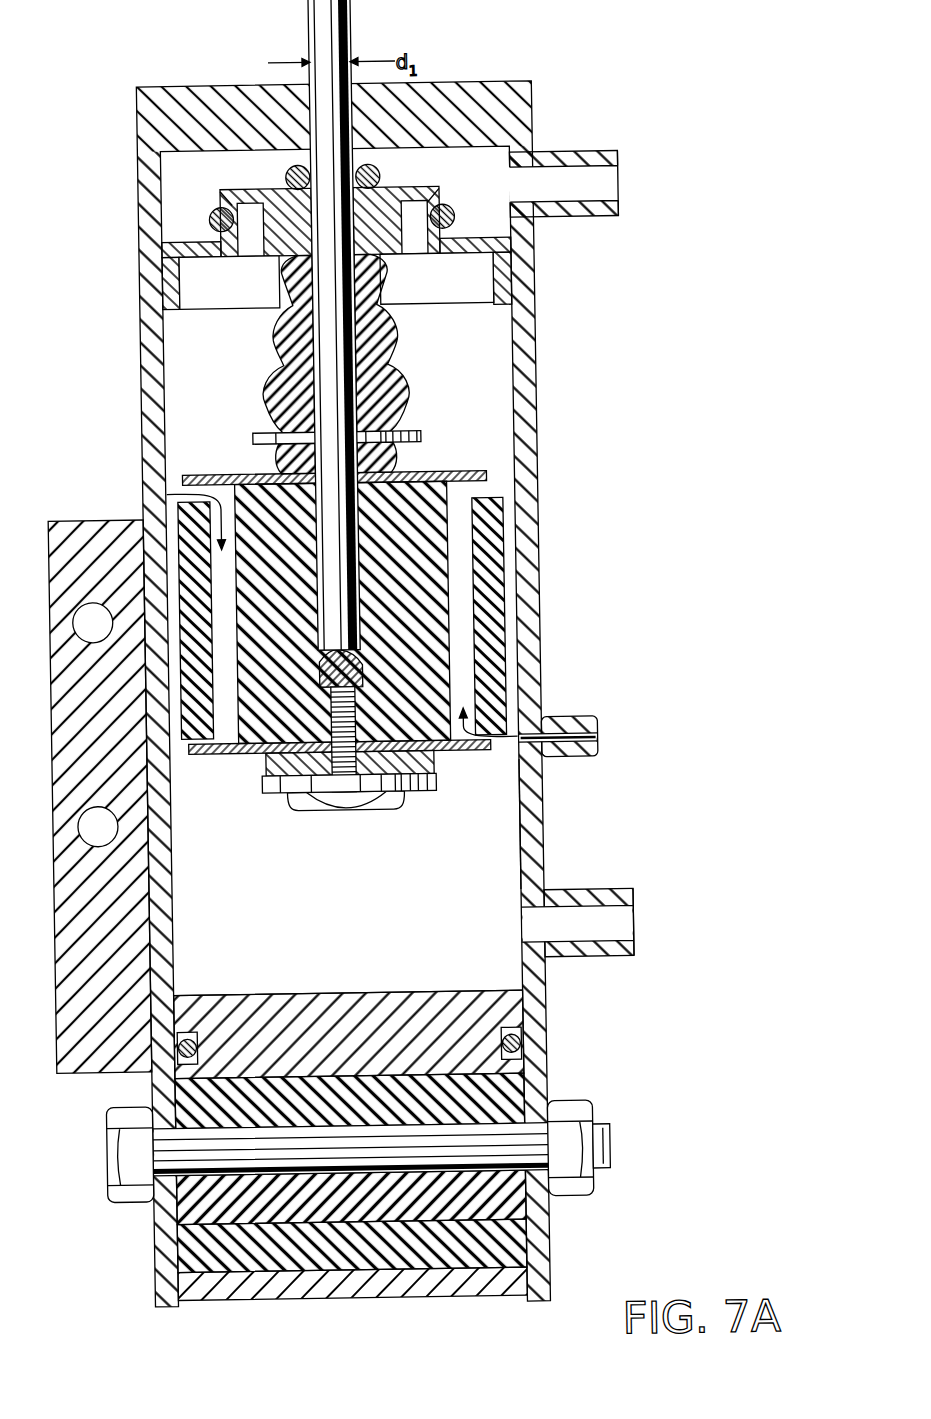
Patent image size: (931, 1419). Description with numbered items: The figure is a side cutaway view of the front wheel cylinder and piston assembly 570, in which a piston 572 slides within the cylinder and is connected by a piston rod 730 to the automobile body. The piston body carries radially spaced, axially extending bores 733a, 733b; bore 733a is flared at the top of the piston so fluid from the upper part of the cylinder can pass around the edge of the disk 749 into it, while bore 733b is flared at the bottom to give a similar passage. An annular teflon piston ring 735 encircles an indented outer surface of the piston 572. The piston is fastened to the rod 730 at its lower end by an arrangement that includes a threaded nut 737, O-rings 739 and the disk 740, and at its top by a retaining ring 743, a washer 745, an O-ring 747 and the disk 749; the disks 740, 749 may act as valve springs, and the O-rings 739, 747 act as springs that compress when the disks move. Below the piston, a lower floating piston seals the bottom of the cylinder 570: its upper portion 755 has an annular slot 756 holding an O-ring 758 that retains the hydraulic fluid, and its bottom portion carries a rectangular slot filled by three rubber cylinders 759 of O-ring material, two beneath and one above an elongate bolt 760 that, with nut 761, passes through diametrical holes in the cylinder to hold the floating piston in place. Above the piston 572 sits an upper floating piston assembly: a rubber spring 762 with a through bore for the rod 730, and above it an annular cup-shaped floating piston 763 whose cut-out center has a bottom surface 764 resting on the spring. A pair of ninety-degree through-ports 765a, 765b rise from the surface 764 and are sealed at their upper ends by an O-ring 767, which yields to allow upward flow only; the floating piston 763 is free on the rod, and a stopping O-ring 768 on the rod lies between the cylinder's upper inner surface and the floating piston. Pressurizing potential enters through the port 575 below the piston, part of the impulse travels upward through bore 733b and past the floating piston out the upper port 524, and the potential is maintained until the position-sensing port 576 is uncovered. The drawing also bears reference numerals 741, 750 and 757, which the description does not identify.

The piston rod 730 is at (363, 44).
The upper port 524 is at (626, 169).
The front wheel cylinder and piston assembly 570 is at (541, 313).
The stopping O-ring 768 is at (299, 172).
The cup-shaped floating piston 763 is at (425, 189).
The O-ring 767 is at (453, 211).
The through-port 765a is at (262, 243).
The through-port 765b is at (425, 243).
The bottom surface 764 is at (286, 258).
The rubber spring 762 is at (289, 367).
The retaining ring 743 is at (395, 347).
The washer 745 is at (424, 427).
The disk 749 is at (476, 467).
The O-ring 747 is at (396, 462).
The left boot lobe 750 is at (284, 463).
The bore 733a is at (226, 470).
The bore 733b is at (507, 676).
The teflon piston ring 735 is at (143, 509).
The position-sensing port 576 is at (596, 744).
The lower chamber 741 is at (542, 770).
The O-rings 739 is at (416, 766).
The disk 740 is at (234, 752).
The piston 572 is at (197, 762).
The threaded nut 737 is at (330, 815).
The port 575 is at (627, 917).
The O-ring 758 is at (240, 996).
The upper portion 755 is at (344, 992).
The annular slot 756 is at (516, 1036).
The rubber cylinders 759 is at (504, 1100).
The nut 761 is at (587, 1112).
The elongate bolt 760 is at (100, 1153).
The bottom plate 757 is at (242, 1299).